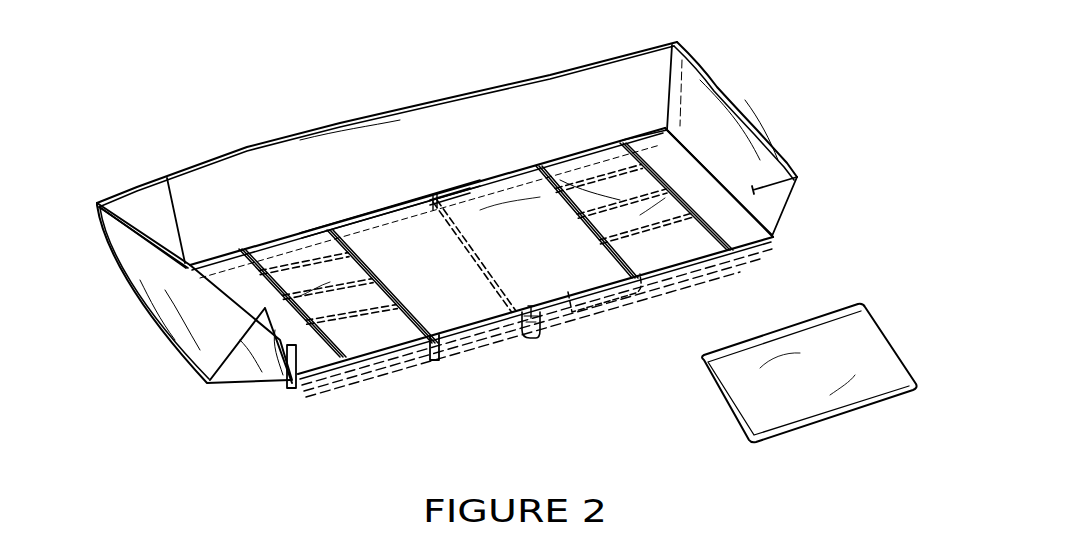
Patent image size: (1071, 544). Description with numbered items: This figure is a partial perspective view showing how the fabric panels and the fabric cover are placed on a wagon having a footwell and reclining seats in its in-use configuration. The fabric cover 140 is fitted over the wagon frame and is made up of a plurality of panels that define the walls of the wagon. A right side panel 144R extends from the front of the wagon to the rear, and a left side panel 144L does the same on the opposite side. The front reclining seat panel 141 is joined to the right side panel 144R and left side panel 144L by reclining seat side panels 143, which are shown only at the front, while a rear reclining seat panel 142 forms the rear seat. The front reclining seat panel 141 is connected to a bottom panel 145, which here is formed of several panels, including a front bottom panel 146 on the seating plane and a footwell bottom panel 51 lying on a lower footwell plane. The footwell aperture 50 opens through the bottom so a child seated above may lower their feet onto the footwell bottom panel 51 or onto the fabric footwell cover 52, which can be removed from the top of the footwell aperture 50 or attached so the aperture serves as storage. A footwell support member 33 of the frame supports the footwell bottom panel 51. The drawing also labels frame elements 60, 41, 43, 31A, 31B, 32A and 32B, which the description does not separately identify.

The fabric cover 140 is at (647, 58).
The front reclining seat panel 141 is at (160, 300).
The rear reclining seat panel 142 is at (743, 107).
The reclining seat side panel 143 is at (137, 203).
The left side panel 144L is at (797, 177).
The right side panel 144R is at (397, 123).
The bottom panel 145 is at (353, 330).
The front bottom panel 146 is at (292, 347).
The base tray 60 is at (233, 287).
The frame bar 41 is at (380, 280).
The frame 43 is at (587, 230).
The upper rail 31A is at (363, 210).
The lower post 31B is at (433, 330).
The upper divider 32A is at (465, 182).
The lower bracket 32B is at (570, 307).
The footwell aperture 50 is at (510, 222).
The footwell bottom panel 51 is at (522, 340).
The footwell support member 33 is at (535, 343).
The fabric footwell cover 52 is at (823, 386).